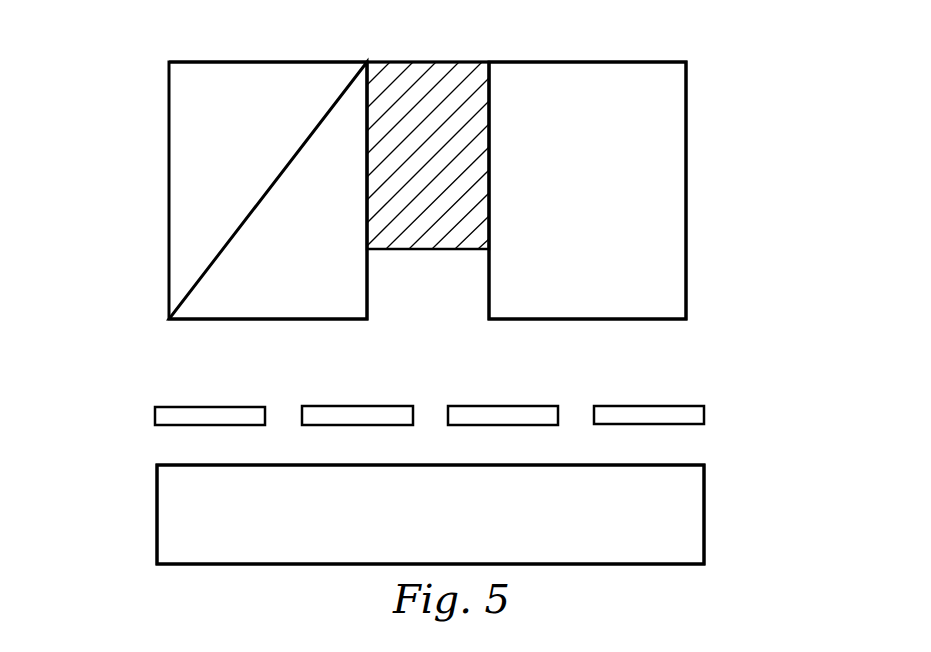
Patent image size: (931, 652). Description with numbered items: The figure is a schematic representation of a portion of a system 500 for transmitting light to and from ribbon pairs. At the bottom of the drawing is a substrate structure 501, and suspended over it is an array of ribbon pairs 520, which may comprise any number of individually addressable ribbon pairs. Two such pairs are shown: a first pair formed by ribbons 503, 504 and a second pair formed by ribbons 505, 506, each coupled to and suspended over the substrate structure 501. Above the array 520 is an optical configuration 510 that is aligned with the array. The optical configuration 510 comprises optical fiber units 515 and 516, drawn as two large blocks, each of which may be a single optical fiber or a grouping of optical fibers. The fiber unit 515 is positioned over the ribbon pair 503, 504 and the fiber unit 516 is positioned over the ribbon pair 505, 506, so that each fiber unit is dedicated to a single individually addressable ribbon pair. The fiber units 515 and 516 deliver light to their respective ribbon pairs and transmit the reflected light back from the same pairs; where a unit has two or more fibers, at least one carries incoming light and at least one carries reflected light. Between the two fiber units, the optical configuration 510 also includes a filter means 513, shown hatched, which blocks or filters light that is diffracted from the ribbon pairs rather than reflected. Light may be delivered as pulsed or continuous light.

The system 500 is at (147, 56).
The optical configuration 510 is at (128, 62).
The filter means 513 is at (425, 62).
The optical fiber unit 515 is at (169, 145).
The optical fiber unit 516 is at (686, 160).
The ribbon 503 is at (207, 406).
The ribbon 504 is at (355, 406).
The ribbon 505 is at (502, 406).
The ribbon 506 is at (650, 406).
The array of ribbon pairs 520 is at (130, 465).
The substrate structure 501 is at (704, 518).